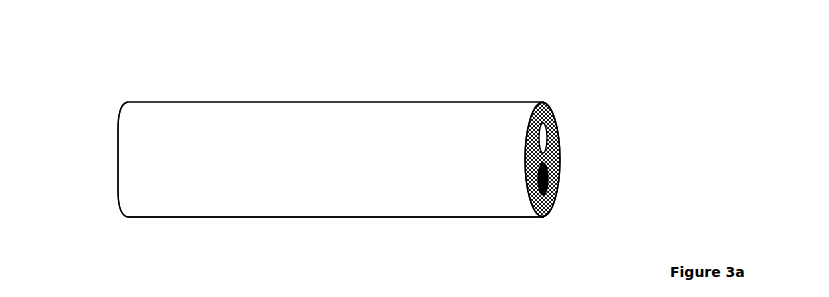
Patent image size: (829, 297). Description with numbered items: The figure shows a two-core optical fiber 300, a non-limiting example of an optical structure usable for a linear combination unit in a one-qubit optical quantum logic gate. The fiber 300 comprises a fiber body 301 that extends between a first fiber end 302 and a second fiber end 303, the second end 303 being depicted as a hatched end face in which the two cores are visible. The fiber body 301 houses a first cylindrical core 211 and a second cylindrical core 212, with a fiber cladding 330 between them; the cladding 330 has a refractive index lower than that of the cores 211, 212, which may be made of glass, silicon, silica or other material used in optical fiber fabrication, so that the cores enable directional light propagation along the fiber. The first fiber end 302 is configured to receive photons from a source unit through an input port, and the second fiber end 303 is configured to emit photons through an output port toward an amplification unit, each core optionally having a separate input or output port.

The two-core optical fiber 300 is at (171, 61).
The fiber body 301 is at (462, 218).
The first fiber end 302 is at (118, 131).
The second fiber end 303 is at (548, 105).
The first cylindrical core 211 is at (540, 138).
The second cylindrical core 212 is at (553, 208).
The fiber cladding 330 is at (550, 158).